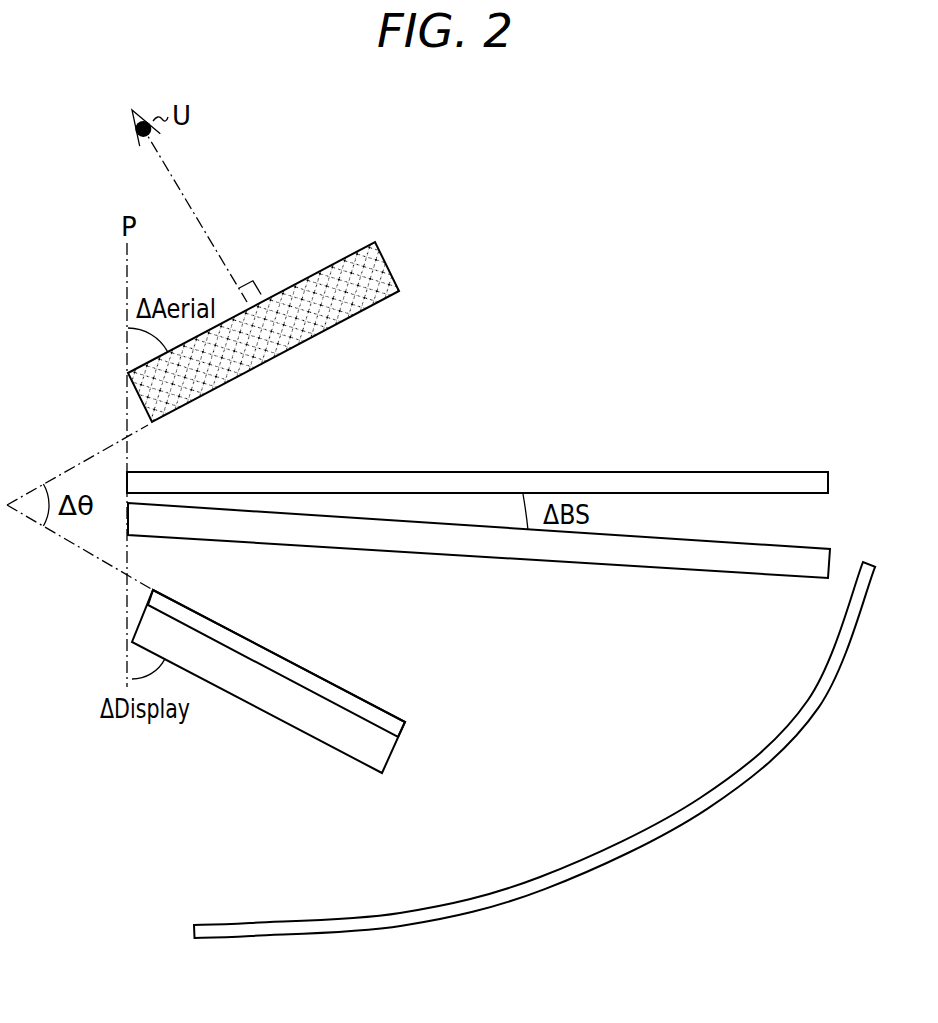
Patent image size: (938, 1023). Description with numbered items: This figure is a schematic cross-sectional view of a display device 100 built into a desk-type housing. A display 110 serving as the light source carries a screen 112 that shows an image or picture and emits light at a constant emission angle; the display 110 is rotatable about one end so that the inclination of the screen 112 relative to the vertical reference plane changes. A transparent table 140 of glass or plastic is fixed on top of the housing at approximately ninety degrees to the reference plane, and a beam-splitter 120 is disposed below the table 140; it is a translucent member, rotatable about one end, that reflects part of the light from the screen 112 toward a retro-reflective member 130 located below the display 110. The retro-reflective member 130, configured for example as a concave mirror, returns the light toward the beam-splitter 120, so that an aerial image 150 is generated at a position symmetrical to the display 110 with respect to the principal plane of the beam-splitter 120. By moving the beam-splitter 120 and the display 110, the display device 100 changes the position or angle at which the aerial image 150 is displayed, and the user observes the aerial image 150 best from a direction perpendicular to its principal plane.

The display device 100 is at (682, 352).
The display 110 is at (402, 735).
The screen 112 is at (375, 703).
The beam-splitter 120 is at (767, 578).
The retro-reflective member 130 is at (194, 931).
The table 140 is at (795, 470).
The aerial image 150 is at (399, 291).